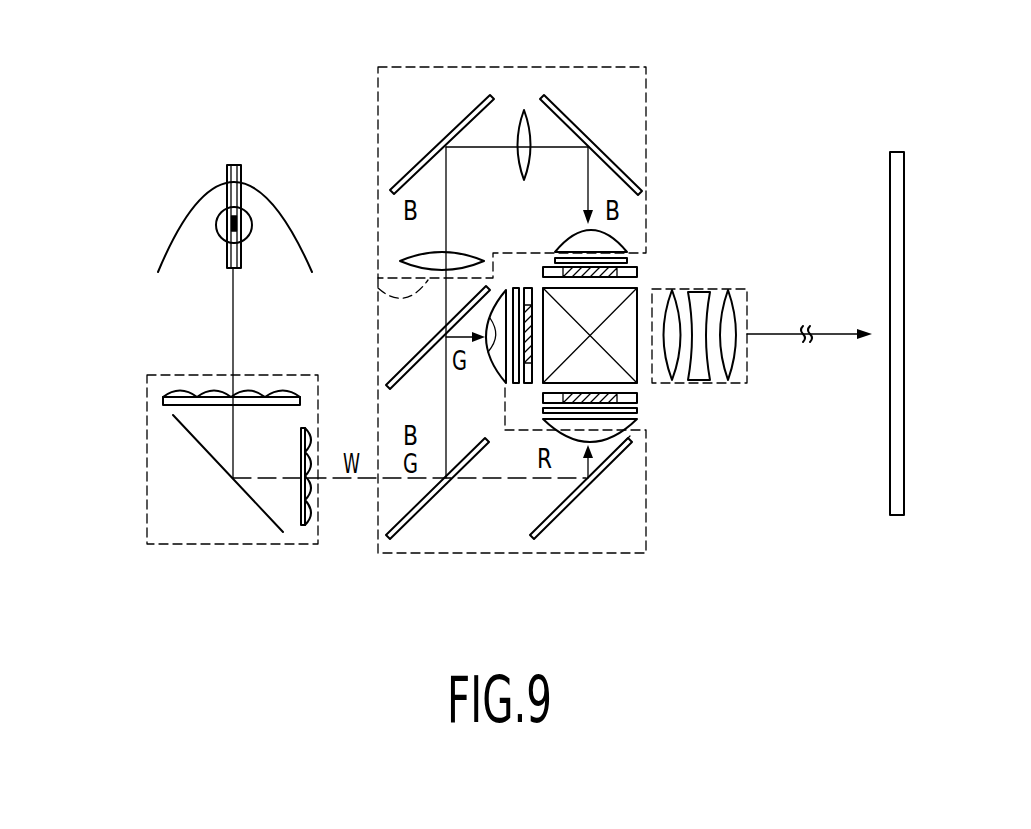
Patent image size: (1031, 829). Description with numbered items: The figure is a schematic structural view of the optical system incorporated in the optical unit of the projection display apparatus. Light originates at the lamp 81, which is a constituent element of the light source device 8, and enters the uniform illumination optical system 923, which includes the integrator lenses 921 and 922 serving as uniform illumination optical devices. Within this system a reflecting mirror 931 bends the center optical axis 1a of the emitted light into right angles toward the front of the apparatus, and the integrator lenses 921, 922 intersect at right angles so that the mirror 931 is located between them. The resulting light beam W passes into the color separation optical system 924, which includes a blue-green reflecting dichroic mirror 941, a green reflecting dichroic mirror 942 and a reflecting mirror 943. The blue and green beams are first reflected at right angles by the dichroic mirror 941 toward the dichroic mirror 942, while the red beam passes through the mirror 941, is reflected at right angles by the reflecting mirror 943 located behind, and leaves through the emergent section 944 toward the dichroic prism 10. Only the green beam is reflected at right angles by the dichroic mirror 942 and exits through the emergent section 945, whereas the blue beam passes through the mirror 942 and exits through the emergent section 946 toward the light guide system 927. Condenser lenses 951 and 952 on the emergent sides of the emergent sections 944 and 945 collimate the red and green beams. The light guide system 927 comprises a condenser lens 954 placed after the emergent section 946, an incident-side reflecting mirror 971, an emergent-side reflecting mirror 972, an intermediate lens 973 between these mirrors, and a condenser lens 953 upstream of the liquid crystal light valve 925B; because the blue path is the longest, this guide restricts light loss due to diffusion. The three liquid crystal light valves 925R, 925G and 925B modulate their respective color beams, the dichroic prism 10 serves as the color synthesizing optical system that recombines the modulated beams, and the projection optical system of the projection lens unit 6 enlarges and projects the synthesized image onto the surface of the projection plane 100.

The light source device 8 is at (160, 235).
The lamp 81 is at (222, 222).
The center optical axis 1a is at (228, 332).
The integrator lens 921 is at (163, 393).
The integrator lens 922 is at (308, 527).
The uniform illumination optical system 923 is at (147, 475).
The reflecting mirror 931 is at (253, 503).
The light guide system 927 is at (372, 63).
The incident-side reflecting mirror 971 is at (418, 157).
The emergent-side reflecting mirror 972 is at (580, 128).
The intermediate lens 973 is at (523, 108).
The condenser lens 954 is at (400, 262).
The emergent section for the blue beam 946 is at (378, 288).
The green reflecting dichroic mirror 942 is at (405, 365).
The emergent section for the green beam 945 is at (488, 352).
The condenser lens 952 is at (490, 298).
The liquid crystal light valve 925G is at (527, 288).
The liquid crystal light valve 925B is at (637, 267).
The liquid crystal light valve 925R is at (638, 398).
The condenser lens 953 is at (628, 242).
The condenser lens 951 is at (605, 440).
The dichroic prism 10 is at (640, 288).
The projection lens unit 6 is at (750, 305).
The projection plane 100 is at (905, 185).
The color separation optical system 924 is at (648, 540).
The blue-green reflecting dichroic mirror 941 is at (403, 530).
The reflecting mirror 943 is at (550, 530).
The emergent section for the red beam 944 is at (627, 442).